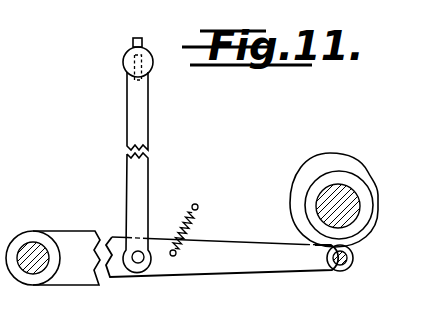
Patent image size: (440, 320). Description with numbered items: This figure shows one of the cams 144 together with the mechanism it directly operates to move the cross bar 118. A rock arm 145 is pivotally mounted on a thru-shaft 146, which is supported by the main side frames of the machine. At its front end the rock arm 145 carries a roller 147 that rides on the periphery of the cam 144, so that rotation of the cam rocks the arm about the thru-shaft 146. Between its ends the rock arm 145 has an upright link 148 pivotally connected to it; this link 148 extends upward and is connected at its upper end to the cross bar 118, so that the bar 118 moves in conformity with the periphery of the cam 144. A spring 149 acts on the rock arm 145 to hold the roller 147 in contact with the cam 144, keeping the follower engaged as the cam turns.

The cross bar 118 is at (133, 42).
The cam 144 is at (335, 162).
The rock arm 145 is at (237, 262).
The thru-shaft 146 is at (34, 243).
The roller 147 is at (341, 271).
The upright link 148 is at (138, 171).
The spring 149 is at (195, 224).